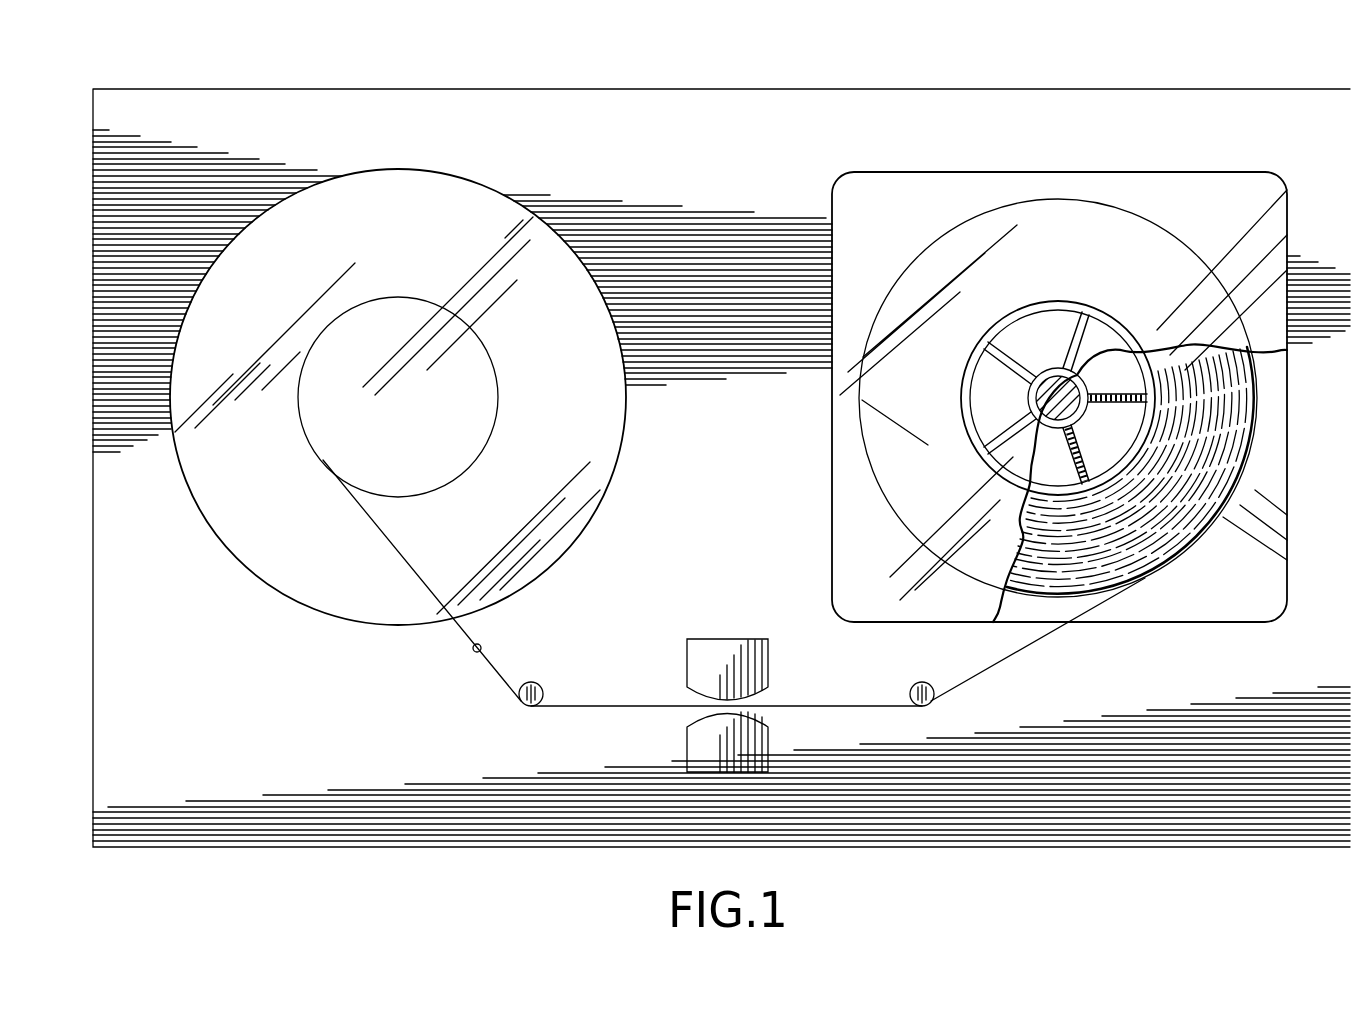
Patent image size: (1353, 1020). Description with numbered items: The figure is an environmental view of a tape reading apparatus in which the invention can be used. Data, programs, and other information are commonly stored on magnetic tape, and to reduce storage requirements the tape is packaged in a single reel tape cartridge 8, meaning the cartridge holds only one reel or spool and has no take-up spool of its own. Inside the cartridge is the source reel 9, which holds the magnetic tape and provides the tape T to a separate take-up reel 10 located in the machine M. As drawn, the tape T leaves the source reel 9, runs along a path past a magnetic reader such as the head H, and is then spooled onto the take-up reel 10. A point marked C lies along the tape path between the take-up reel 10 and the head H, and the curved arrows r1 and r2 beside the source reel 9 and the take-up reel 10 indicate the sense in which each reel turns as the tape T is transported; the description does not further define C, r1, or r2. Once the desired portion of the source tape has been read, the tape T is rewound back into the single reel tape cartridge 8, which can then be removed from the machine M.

The single reel tape cartridge 8 is at (1000, 153).
The source reel 9 is at (1247, 473).
The take-up reel 10 is at (229, 545).
The tape contact point C is at (473, 651).
The head H is at (687, 657).
The tape T is at (1023, 652).
The machine M is at (1085, 872).
The take-up reel rotation direction r1 is at (1227, 546).
The supply reel rotation direction r2 is at (500, 458).